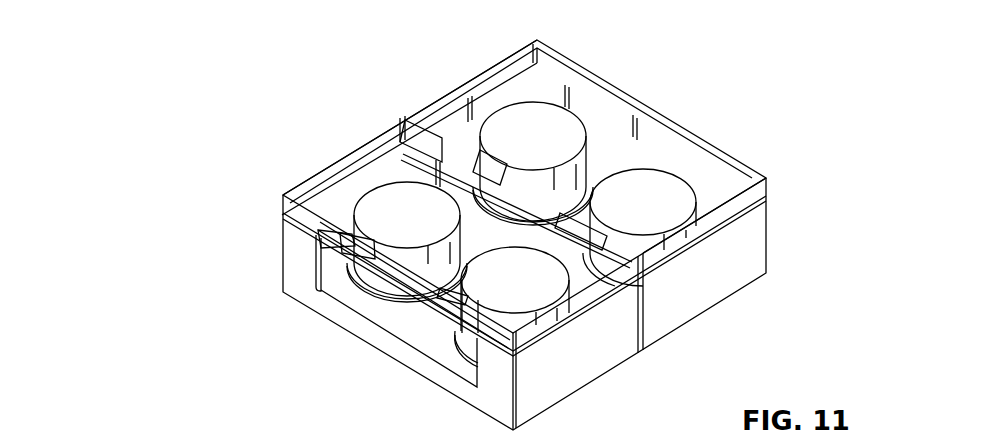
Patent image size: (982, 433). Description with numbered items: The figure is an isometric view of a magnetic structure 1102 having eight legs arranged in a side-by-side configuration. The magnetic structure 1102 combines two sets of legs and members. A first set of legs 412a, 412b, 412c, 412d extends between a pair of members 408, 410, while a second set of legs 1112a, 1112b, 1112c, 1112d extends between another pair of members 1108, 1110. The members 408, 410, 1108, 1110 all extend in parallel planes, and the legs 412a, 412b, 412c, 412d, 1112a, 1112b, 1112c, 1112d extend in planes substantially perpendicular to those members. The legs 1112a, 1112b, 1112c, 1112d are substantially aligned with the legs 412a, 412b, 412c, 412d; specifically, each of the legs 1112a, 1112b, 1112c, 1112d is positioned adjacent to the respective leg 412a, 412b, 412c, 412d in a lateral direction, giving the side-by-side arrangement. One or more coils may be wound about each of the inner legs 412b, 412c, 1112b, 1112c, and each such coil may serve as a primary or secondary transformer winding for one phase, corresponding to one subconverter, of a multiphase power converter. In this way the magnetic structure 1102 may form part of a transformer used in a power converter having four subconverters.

The magnetic structure 1102 is at (163, 44).
The member 408 is at (563, 65).
The member 410 is at (612, 173).
The leg 412a is at (447, 127).
The leg 412b is at (538, 115).
The leg 412c is at (680, 192).
The leg 412d is at (748, 252).
The member 1108 is at (318, 176).
The member 1110 is at (348, 320).
The leg 1112a is at (298, 262).
The leg 1112b is at (399, 184).
The leg 1112c is at (497, 293).
The leg 1112d is at (572, 368).